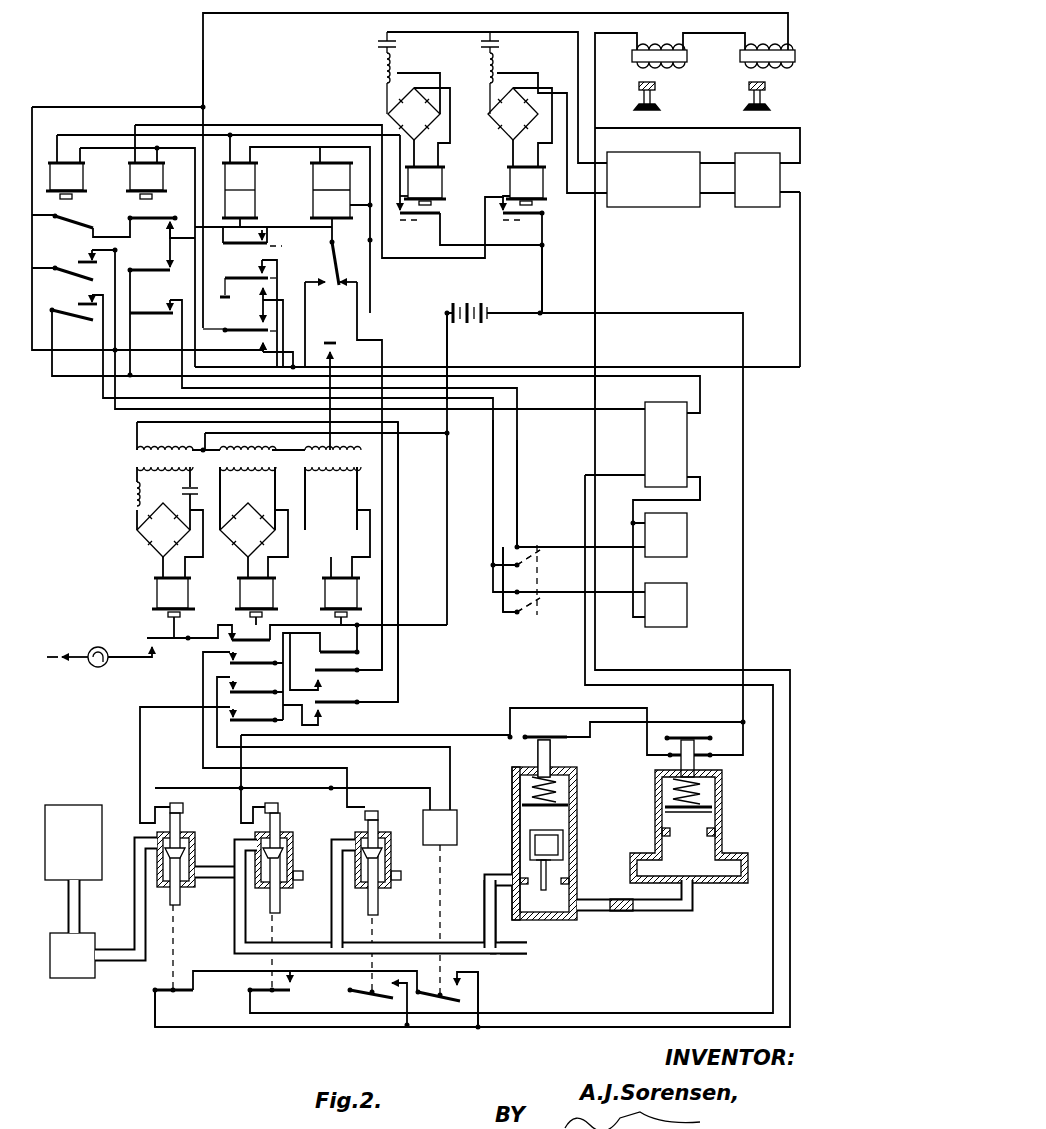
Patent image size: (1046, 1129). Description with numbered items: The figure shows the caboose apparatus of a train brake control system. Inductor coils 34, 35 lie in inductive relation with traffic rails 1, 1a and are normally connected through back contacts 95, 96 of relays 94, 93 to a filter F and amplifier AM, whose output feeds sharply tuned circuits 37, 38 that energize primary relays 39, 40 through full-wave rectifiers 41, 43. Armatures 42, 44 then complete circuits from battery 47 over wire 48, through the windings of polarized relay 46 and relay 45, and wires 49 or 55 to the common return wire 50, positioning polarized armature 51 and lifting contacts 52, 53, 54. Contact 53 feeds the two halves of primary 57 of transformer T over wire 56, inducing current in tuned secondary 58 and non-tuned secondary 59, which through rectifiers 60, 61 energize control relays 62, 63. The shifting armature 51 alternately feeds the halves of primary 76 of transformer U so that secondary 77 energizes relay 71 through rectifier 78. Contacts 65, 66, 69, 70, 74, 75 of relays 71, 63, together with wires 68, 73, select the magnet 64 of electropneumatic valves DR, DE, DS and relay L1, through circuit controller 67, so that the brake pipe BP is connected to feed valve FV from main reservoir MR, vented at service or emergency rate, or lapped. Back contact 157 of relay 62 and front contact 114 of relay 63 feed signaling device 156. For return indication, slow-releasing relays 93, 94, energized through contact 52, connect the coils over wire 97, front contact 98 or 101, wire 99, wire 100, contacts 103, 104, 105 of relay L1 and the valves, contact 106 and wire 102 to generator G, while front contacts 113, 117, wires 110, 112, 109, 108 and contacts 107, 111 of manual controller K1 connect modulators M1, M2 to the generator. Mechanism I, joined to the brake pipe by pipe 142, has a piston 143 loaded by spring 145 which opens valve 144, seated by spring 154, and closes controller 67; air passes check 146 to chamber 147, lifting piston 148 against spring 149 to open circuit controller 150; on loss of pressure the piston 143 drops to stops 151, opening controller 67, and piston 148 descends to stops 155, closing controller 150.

The wire 99 is at (203, 88).
The wire 55 is at (253, 125).
The wire 49 is at (296, 135).
The relay 93 is at (83, 175).
The relay 94 is at (158, 175).
The relay 45 is at (255, 170).
The polarized relay 46 is at (318, 196).
The back contact of relay 93 96 is at (93, 226).
The back contact of relay 94 95 is at (166, 234).
The front contact of relay 93 98 is at (88, 258).
The front contact of relay 94 101 is at (170, 272).
The front contact of relay 93 113 is at (88, 300).
The front contact of relay 94 117 is at (168, 306).
The contact of relay 45 52 is at (252, 233).
The contact of relay 45 53 is at (250, 277).
The contact of relay 45 54 is at (241, 326).
The polarized armature 51 is at (334, 255).
The tuned circuit 37 is at (398, 68).
The tuned circuit 38 is at (500, 66).
The full-wave rectifier 41 is at (390, 110).
The full-wave rectifier 43 is at (490, 120).
The primary relay 39 is at (442, 184).
The primary relay 40 is at (512, 182).
The armature of relay 39 42 is at (419, 229).
The armature of relay 40 44 is at (521, 229).
The inductor coil 34 is at (670, 48).
The inductor coil 35 is at (780, 48).
The traffic rail 1 is at (658, 100).
The traffic rail 1a is at (768, 100).
The amplifier AM is at (676, 162).
The filter F is at (762, 162).
The wire 48 is at (453, 308).
The battery 47 is at (487, 308).
The common return wire 50 is at (543, 288).
The wire 100 is at (598, 290).
The wire 56 is at (449, 352).
The generator G is at (688, 450).
The wire 109 is at (553, 378).
The wire 97 is at (553, 411).
The wire 112 is at (518, 495).
The wire 110 is at (493, 532).
The contact of controller K1 111 is at (517, 550).
The manually operated circuit controller K1 is at (547, 568).
The contact of controller K1 107 is at (535, 604).
The wire 108 is at (700, 500).
The modulator M2 is at (666, 535).
The modulator M1 is at (690, 560).
The primary of transformer T 57 is at (186, 448).
The transformer T is at (137, 466).
The primary of transformer U 76 is at (263, 450).
The secondary of transformer U 77 is at (305, 470).
The transformer U is at (342, 462).
The secondary of transformer T 58 is at (167, 492).
The secondary of transformer T 59 is at (247, 498).
The full-wave rectifier 78 is at (325, 510).
The full-wave rectifier 60 is at (146, 540).
The full-wave rectifier 61 is at (243, 552).
The wire 73 is at (398, 540).
The relay 62 is at (160, 596).
The relay 63 is at (241, 596).
The relay 71 is at (330, 596).
The front contact of relay 63 114 is at (232, 632).
The signaling device 156 is at (108, 648).
The back contact of relay 62 157 is at (150, 656).
The front contact of relay 63 75 is at (252, 653).
The front contact of relay 71 65 is at (322, 650).
The front contact of relay 63 70 is at (252, 683).
The back contact of relay 71 74 is at (338, 686).
The wire 68 is at (398, 668).
The front contact of relay 63 66 is at (252, 711).
The back contact of relay 71 69 is at (339, 717).
The circuit controller 67 is at (540, 732).
The circuit controller 150 is at (680, 735).
The mechanism I is at (528, 765).
The piston 143 is at (512, 808).
The spring 145 is at (570, 786).
The spring 154 is at (572, 815).
The stops 151 is at (565, 840).
The valve 144 is at (548, 880).
The chamber 147 is at (720, 880).
The spring 149 is at (716, 785).
The piston 148 is at (712, 812).
The stops 155 is at (715, 835).
The main reservoir MR is at (73, 827).
The feed valve FV is at (96, 948).
The electropneumatic valve DR is at (195, 846).
The electropneumatic valve DE is at (293, 848).
The electropneumatic valve DS is at (391, 856).
The relay L1 is at (457, 832).
The pipe 142 is at (488, 922).
The brake pipe BP is at (520, 950).
The check 146 is at (620, 912).
The magnet 64 is at (183, 806).
The contact 104 is at (198, 990).
The contact of valve DE 106 is at (292, 990).
The contact of valve DS 105 is at (398, 1005).
The contact 103 is at (478, 997).
The wire 102 is at (558, 1013).